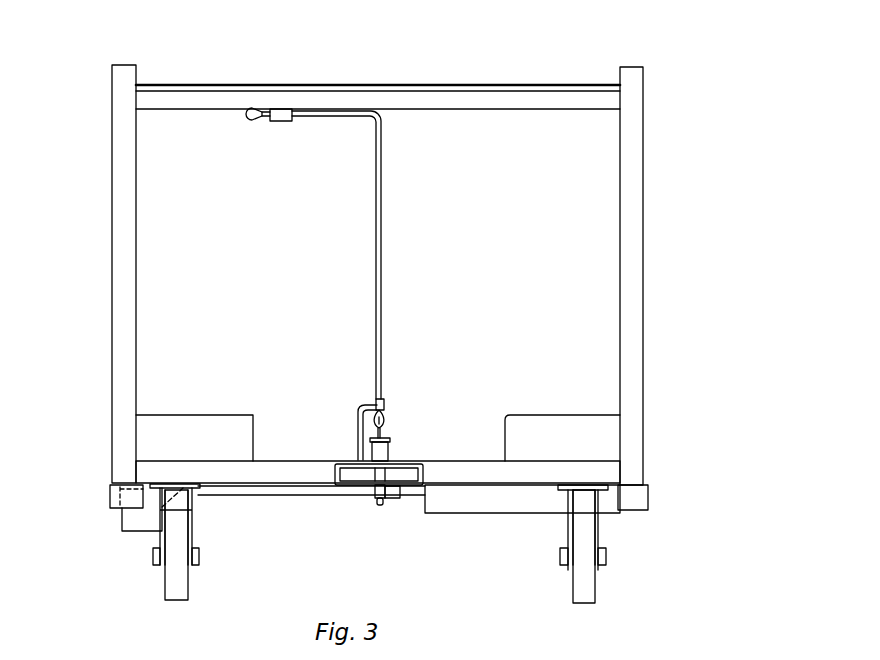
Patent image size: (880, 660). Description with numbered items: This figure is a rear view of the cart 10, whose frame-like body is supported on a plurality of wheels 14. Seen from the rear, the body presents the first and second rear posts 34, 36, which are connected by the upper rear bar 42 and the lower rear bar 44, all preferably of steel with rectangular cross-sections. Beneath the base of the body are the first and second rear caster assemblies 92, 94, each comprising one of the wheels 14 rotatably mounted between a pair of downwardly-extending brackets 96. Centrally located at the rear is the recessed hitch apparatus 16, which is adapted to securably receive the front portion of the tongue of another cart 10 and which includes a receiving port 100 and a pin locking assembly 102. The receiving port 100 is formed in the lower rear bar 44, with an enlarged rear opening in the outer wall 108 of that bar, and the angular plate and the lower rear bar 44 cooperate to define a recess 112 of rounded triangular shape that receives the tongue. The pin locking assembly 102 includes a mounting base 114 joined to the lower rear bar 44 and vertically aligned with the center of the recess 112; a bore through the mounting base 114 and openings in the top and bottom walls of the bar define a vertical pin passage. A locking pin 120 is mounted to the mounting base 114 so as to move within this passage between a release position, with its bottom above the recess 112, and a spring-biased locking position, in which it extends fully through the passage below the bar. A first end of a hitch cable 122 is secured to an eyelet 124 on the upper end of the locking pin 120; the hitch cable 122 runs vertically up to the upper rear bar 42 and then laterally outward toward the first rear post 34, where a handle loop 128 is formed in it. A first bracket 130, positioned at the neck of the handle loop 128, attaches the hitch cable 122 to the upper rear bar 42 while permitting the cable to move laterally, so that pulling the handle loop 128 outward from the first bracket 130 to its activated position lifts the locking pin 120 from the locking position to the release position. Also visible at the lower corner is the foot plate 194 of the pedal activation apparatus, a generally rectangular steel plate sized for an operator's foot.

The cart 10 is at (694, 199).
The wheels 14 is at (180, 592).
The recessed hitch apparatus 16 is at (352, 470).
The first rear post 34 is at (120, 172).
The second rear post 36 is at (632, 152).
The upper rear bar 42 is at (486, 99).
The lower rear bar 44 is at (563, 464).
The first rear caster assembly 92 is at (128, 573).
The second rear caster assembly 94 is at (625, 563).
The brackets 96 is at (163, 532).
The receiving port 100 is at (353, 485).
The pin locking assembly 102 is at (405, 423).
The outer wall 108 is at (588, 475).
The recess 112 is at (332, 412).
The mounting base 114 is at (386, 453).
The locking pin 120 is at (378, 502).
The hitch cable 122 is at (382, 268).
The eyelet 124 is at (390, 418).
The handle loop 128 is at (245, 122).
The first bracket 130 is at (272, 121).
The foot plate 194 is at (127, 518).